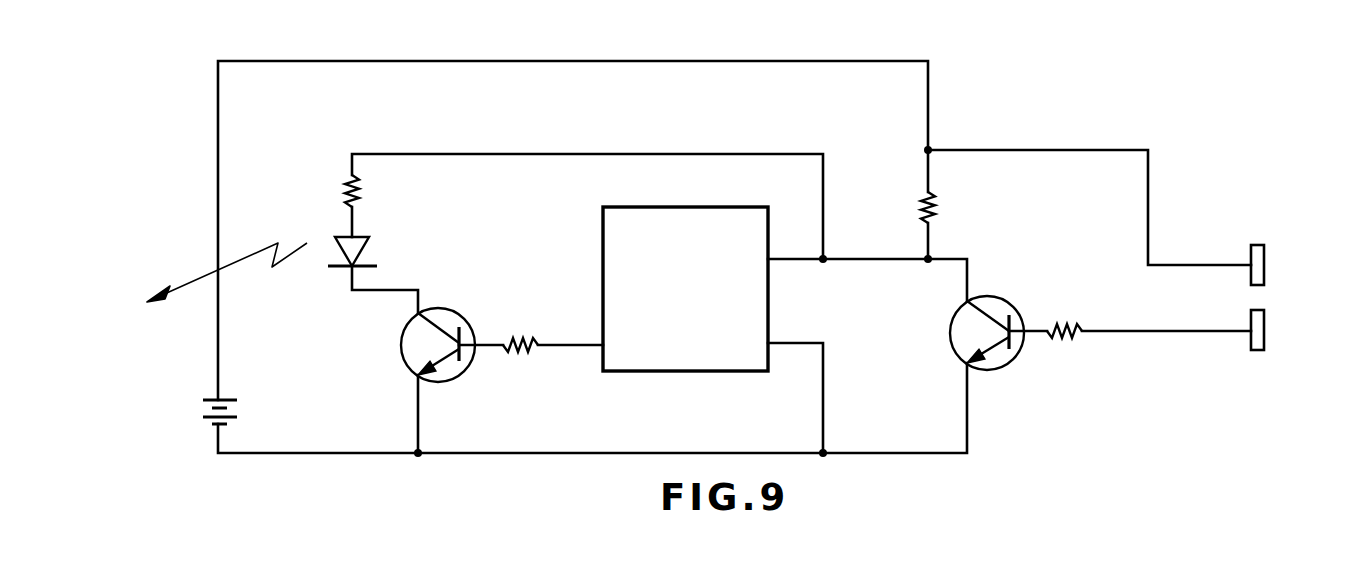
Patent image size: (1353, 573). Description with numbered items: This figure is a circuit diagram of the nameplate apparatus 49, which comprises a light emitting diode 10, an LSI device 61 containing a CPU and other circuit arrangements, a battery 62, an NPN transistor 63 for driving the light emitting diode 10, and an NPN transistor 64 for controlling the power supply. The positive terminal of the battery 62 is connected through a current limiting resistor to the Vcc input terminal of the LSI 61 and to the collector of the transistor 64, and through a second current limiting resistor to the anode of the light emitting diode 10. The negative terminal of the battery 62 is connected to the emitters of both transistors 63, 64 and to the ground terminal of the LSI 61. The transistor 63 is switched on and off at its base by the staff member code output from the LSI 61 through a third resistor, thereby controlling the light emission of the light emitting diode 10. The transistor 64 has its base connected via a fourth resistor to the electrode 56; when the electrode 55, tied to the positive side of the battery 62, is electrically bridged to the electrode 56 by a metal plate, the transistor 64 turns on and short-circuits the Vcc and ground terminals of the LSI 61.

The nameplate apparatus 49 is at (1065, 112).
The light emitting diode 10 is at (368, 243).
The NPN transistor 63 is at (447, 312).
The LSI device 61 is at (770, 310).
The NPN transistor 64 is at (1001, 305).
The electrode 55 is at (1267, 264).
The electrode plate 56 is at (1267, 331).
The battery 62 is at (240, 412).